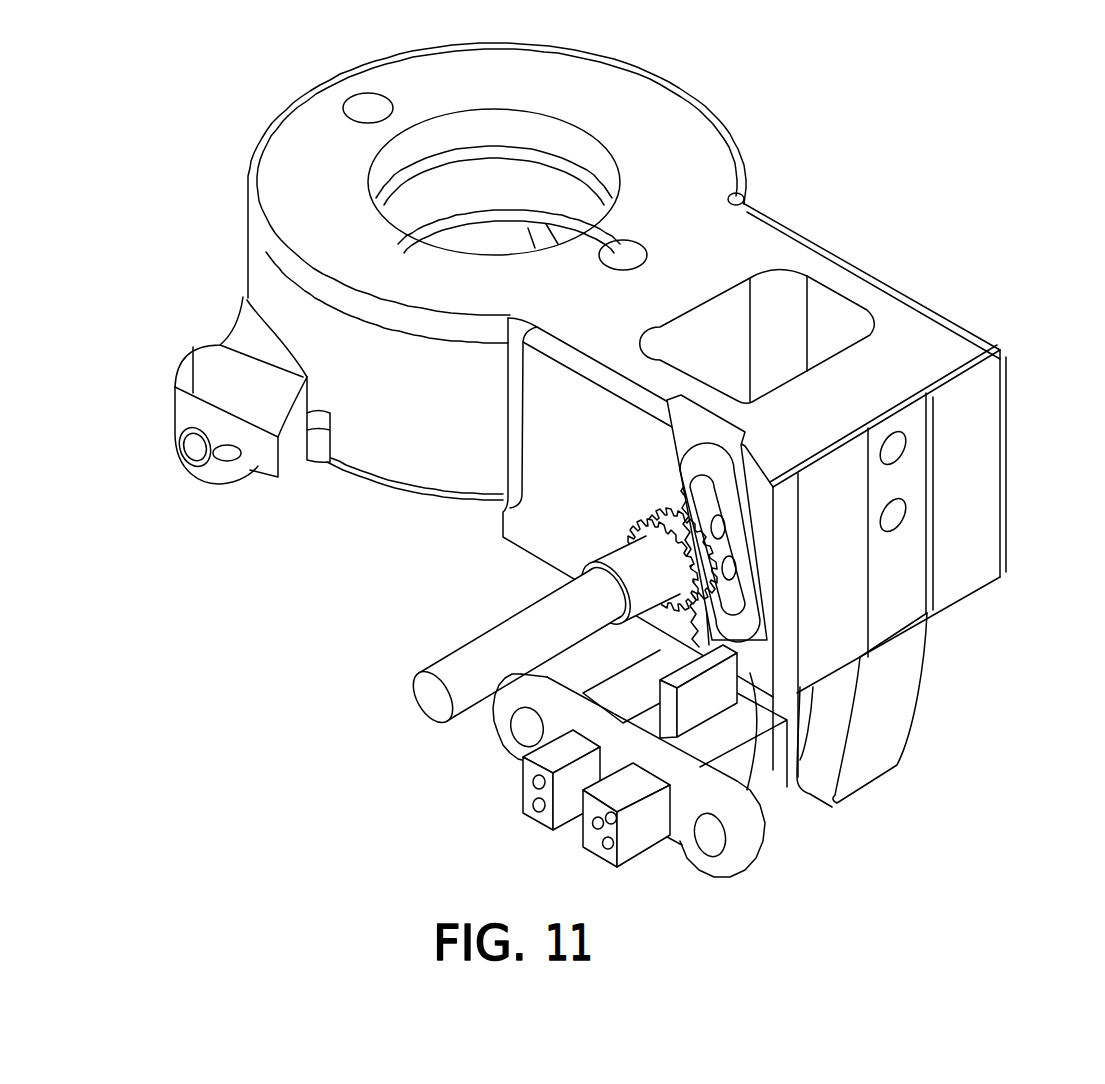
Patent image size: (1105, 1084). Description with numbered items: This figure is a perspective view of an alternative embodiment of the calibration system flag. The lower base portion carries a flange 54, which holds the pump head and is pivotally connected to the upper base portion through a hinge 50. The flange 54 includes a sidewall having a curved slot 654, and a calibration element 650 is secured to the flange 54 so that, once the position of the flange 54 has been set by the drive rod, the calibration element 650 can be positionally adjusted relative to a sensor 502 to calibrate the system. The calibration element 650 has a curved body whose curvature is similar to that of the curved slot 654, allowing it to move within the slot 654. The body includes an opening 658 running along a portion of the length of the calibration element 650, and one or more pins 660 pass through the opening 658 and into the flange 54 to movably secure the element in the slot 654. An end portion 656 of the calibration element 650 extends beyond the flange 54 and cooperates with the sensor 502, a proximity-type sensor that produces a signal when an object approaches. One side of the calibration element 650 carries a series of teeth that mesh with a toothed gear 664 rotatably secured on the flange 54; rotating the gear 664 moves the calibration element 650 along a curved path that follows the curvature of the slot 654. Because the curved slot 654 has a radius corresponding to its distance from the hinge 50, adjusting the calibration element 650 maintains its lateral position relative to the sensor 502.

The hinge 50 is at (176, 457).
The flange 54 is at (553, 485).
The sensor 502 is at (753, 838).
The calibration element 650 is at (960, 712).
The curved slot 654 is at (766, 488).
The end portion 656 is at (700, 693).
The opening 658 is at (740, 580).
The pins 660 is at (688, 490).
The toothed gear 664 is at (663, 520).